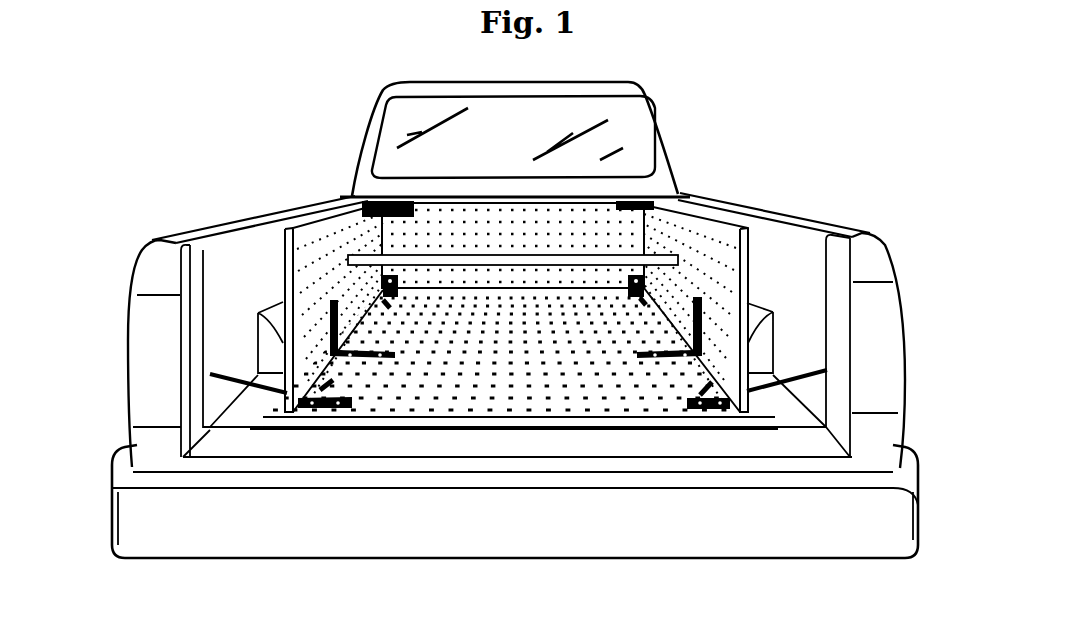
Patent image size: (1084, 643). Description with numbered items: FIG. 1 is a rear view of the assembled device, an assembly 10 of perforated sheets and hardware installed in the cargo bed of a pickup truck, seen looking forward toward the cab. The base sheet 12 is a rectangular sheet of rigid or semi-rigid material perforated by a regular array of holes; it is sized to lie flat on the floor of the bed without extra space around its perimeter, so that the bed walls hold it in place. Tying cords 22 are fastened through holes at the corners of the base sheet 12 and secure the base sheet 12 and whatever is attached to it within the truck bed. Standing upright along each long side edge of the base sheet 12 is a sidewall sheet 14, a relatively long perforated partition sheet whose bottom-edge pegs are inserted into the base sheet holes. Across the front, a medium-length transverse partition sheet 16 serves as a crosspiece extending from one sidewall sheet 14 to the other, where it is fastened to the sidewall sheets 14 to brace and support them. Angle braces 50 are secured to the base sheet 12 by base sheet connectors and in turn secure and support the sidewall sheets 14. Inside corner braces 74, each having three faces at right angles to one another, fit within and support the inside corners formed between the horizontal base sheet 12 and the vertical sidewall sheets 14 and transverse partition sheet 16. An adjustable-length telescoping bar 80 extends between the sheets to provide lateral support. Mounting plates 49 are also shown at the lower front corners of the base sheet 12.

The assembly 10 is at (722, 154).
The base sheet 12 is at (367, 410).
The sidewall sheet 14 is at (283, 275).
The transverse partition sheet 16 is at (347, 197).
The tying cord 22 is at (226, 378).
The floor mounting plate 49 is at (709, 405).
The angle brace 50 is at (696, 338).
The inside corner brace 74 is at (645, 280).
The telescoping bar 80 is at (640, 258).